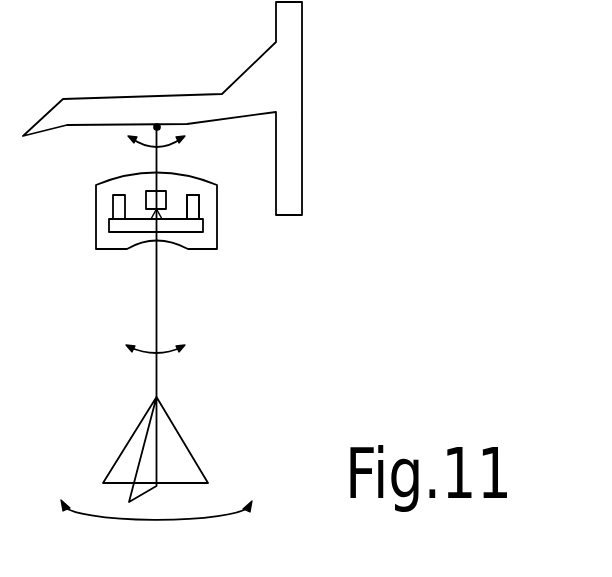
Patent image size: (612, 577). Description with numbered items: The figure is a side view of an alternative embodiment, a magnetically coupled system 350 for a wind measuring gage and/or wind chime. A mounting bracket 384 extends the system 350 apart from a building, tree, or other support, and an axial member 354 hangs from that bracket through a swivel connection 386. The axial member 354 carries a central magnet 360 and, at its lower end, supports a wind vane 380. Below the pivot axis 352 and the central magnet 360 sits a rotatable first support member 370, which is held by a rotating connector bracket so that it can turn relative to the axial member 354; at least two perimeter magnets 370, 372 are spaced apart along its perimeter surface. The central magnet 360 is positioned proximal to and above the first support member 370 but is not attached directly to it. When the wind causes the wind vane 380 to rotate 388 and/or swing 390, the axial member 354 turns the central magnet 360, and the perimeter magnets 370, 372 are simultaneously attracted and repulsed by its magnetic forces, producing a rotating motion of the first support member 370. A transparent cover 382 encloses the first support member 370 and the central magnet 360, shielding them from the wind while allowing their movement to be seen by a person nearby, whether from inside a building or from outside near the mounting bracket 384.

The magnetically coupled system 350 is at (476, 83).
The pivot axis 352 is at (167, 212).
The axial member 354 is at (157, 332).
The central magnet 360 is at (163, 202).
The first support member 370 is at (113, 199).
The perimeter magnet 372 is at (199, 200).
The wind vane 380 is at (175, 425).
The transparent cover 382 is at (111, 183).
The mounting bracket 384 is at (285, 63).
The swivel connection 386 is at (157, 127).
The rotation of the wind vane 388 is at (213, 520).
The swinging of the wind vane 390 is at (152, 357).